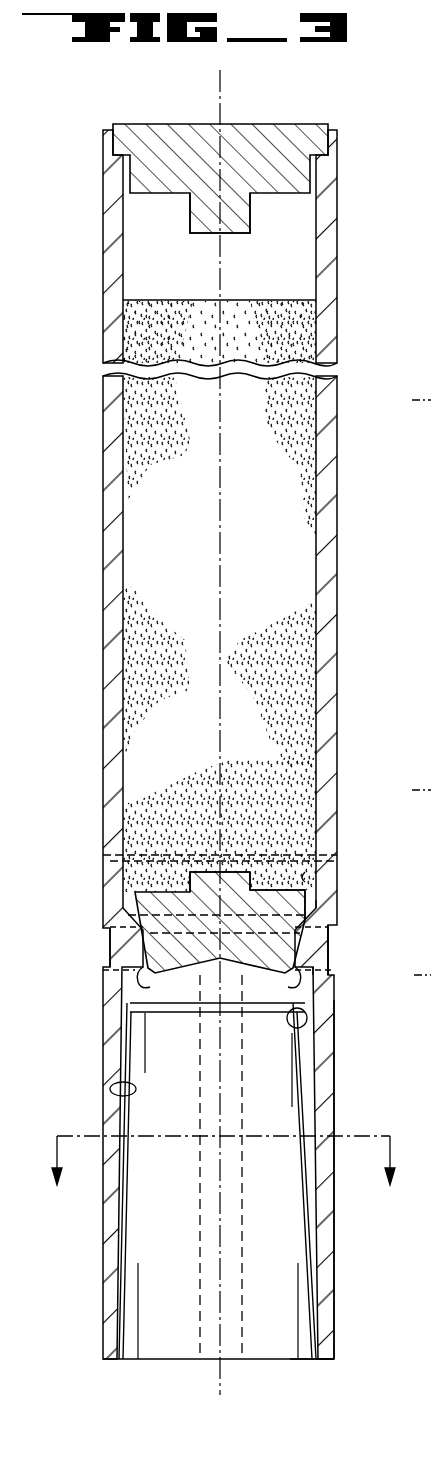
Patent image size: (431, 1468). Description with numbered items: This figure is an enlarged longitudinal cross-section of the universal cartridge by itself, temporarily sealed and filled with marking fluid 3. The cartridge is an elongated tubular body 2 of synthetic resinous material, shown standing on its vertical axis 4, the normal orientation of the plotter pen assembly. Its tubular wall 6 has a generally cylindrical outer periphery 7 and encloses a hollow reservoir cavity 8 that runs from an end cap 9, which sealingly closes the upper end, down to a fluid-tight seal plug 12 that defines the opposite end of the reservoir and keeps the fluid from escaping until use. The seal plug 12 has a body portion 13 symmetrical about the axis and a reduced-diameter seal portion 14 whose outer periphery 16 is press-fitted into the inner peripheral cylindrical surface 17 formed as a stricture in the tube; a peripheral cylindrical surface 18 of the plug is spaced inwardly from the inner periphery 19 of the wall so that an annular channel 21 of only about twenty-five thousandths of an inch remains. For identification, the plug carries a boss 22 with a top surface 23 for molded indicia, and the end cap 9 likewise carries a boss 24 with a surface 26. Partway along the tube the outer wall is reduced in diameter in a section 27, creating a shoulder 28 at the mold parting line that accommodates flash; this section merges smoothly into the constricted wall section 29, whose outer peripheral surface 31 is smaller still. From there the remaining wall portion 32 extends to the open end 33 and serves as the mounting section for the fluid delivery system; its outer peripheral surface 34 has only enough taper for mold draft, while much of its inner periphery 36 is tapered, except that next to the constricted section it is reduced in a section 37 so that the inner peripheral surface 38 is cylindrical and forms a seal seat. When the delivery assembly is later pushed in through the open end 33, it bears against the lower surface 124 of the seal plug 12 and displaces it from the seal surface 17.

The elongated tubular body 2 is at (86, 444).
The marking fluid 3 is at (128, 452).
The vertical axis 4 is at (220, 95).
The tubular wall 6 is at (118, 353).
The outer periphery 7 is at (103, 305).
The hollow cavity 8 is at (138, 252).
The end cap 9 is at (275, 128).
The seal plug 12 is at (145, 905).
The body portion 13 is at (268, 898).
The seal portion 14 is at (272, 972).
The outer periphery of seal portion 16 is at (138, 972).
The inner peripheral cylindrical surface 17 is at (128, 958).
The peripheral cylindrical surface 18 is at (312, 895).
The inner periphery 19 is at (305, 877).
The annular channel 21 is at (312, 908).
The boss 22 is at (216, 882).
The top surface 23 is at (205, 868).
The boss 24 is at (236, 222).
The surface 26 is at (208, 236).
The reduced-diameter tube section 27 is at (97, 893).
The shoulder 28 is at (99, 859).
The constricted wall section 29 is at (122, 952).
The outer peripheral surface 31 is at (330, 955).
The wall portion 32 is at (322, 1082).
The open end 33 is at (292, 1360).
The outer peripheral surface 34 is at (333, 1118).
The inner periphery 36 is at (128, 1090).
The reduced-diameter section 37 is at (318, 993).
The inner peripheral surface 38 is at (312, 1025).
The lower surface of seal plug 124 is at (197, 968).